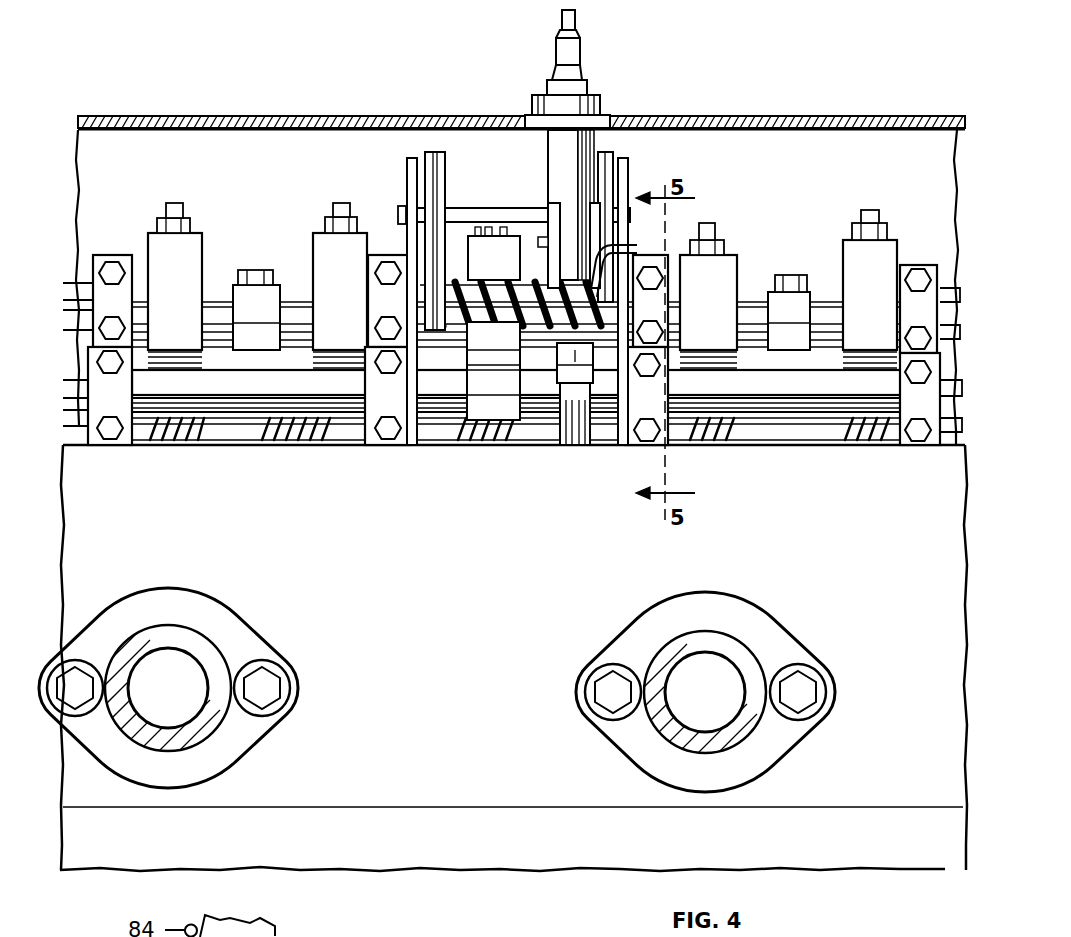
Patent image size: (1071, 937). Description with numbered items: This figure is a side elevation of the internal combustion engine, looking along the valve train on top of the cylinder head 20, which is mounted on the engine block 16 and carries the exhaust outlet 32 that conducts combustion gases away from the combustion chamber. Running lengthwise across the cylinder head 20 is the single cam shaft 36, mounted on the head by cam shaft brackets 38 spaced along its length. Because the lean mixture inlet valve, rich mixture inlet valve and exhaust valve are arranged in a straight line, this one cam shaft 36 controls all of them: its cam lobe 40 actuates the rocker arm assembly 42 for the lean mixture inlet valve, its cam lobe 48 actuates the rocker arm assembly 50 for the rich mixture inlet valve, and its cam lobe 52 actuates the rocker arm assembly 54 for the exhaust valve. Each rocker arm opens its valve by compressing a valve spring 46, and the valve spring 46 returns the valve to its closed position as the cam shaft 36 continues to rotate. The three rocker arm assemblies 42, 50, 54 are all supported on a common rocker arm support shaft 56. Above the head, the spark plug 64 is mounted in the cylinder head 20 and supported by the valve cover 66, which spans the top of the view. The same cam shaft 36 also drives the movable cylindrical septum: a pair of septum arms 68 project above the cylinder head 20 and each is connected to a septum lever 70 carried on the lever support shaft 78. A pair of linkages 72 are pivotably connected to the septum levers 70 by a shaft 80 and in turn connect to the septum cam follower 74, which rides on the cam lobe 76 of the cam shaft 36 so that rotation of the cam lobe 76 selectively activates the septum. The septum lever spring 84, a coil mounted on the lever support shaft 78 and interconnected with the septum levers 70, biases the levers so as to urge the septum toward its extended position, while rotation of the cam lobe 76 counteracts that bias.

The engine block 16 is at (455, 858).
The cylinder head 20 is at (406, 603).
The exhaust outlet 32 is at (137, 630).
The cam shaft 36 is at (265, 395).
The cam shaft brackets 38 is at (112, 395).
The cam lobe 40 is at (282, 425).
The rocker arm assembly 42 is at (318, 265).
The valve spring 46 is at (336, 432).
The cam lobe 48 is at (510, 390).
The rocker arm assembly 50 is at (495, 236).
The cam lobe 52 is at (177, 415).
The rocker arm assembly 54 is at (190, 255).
The rocker arm support shaft 56 is at (825, 315).
The spark plug 64 is at (555, 82).
The valve cover 66 is at (265, 116).
The septum arms 68 is at (440, 152).
The septum lever 70 is at (410, 158).
The linkages 72 is at (592, 205).
The septum cam follower 74 is at (575, 376).
The cam lobe 76 is at (565, 444).
The lever support shaft 78 is at (601, 267).
The shaft 80 is at (400, 215).
The septum lever spring 84 is at (455, 283).